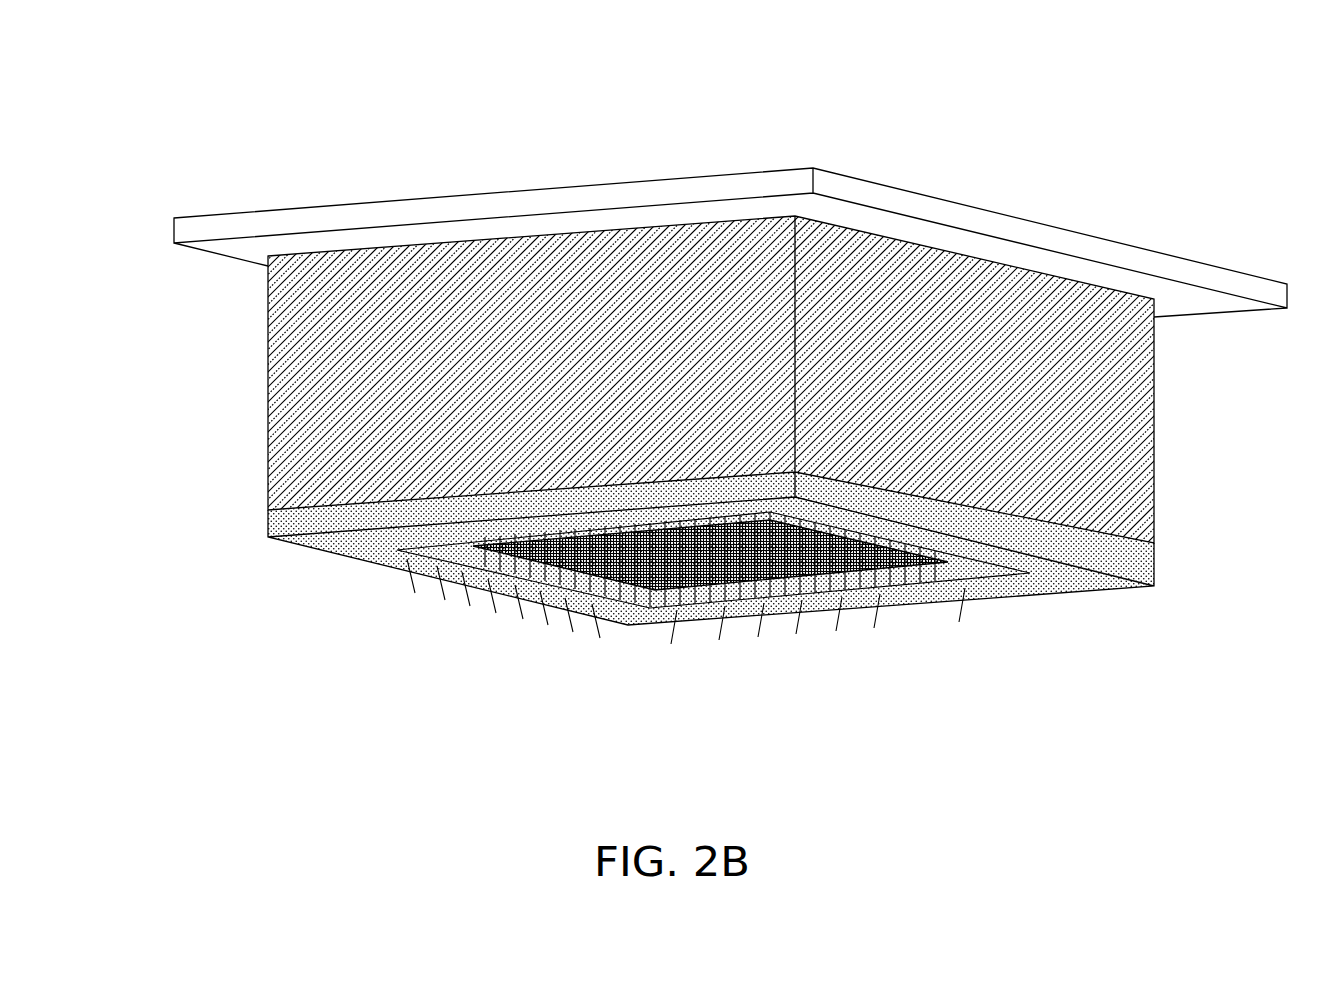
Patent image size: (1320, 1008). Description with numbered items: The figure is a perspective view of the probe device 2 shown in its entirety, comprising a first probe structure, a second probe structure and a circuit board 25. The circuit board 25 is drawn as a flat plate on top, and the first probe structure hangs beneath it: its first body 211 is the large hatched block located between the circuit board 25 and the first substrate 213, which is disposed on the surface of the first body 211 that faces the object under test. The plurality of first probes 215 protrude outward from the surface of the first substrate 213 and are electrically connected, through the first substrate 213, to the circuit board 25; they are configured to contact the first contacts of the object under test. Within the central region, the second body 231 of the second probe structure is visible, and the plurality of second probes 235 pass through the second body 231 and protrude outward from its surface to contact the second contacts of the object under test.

The probe device 2 is at (253, 150).
The circuit board 25 is at (577, 185).
The first body 211 is at (267, 381).
The first substrate 213 is at (267, 525).
The first probes 215 is at (412, 577).
The second body 231 is at (898, 617).
The second probes 235 is at (628, 623).